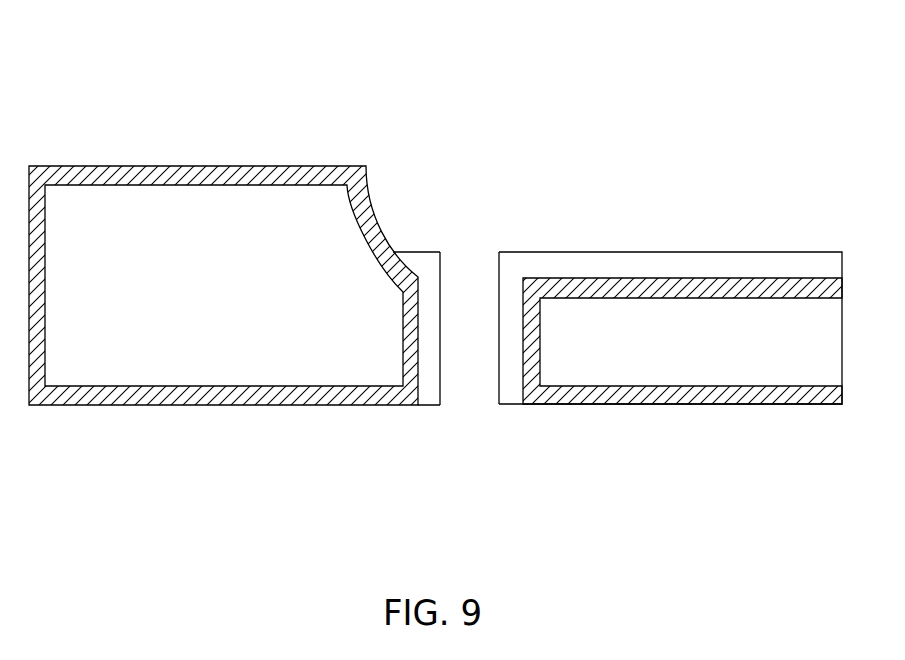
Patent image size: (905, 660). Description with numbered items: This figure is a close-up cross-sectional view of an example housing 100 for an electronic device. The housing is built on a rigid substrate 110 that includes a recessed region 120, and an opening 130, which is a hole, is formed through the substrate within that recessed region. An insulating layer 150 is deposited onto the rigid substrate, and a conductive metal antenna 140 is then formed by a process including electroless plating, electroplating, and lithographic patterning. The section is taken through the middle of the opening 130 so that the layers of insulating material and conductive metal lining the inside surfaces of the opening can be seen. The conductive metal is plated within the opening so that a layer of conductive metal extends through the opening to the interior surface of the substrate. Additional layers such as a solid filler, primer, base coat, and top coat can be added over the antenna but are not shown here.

The housing 100 is at (130, 52).
The rigid substrate 110 is at (200, 197).
The recessed region 120 is at (585, 183).
The opening 130 is at (468, 416).
The conductive metal antenna 140 is at (639, 262).
The insulating layer 150 is at (313, 175).